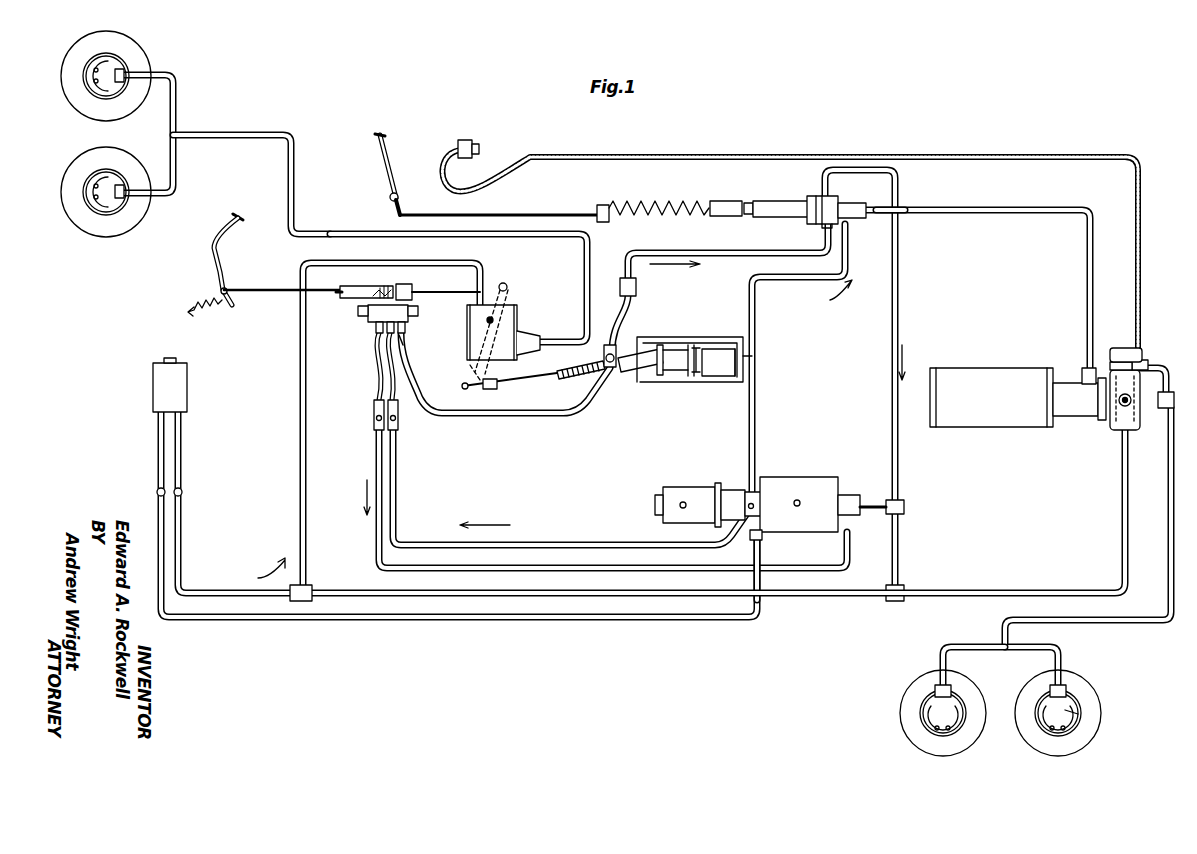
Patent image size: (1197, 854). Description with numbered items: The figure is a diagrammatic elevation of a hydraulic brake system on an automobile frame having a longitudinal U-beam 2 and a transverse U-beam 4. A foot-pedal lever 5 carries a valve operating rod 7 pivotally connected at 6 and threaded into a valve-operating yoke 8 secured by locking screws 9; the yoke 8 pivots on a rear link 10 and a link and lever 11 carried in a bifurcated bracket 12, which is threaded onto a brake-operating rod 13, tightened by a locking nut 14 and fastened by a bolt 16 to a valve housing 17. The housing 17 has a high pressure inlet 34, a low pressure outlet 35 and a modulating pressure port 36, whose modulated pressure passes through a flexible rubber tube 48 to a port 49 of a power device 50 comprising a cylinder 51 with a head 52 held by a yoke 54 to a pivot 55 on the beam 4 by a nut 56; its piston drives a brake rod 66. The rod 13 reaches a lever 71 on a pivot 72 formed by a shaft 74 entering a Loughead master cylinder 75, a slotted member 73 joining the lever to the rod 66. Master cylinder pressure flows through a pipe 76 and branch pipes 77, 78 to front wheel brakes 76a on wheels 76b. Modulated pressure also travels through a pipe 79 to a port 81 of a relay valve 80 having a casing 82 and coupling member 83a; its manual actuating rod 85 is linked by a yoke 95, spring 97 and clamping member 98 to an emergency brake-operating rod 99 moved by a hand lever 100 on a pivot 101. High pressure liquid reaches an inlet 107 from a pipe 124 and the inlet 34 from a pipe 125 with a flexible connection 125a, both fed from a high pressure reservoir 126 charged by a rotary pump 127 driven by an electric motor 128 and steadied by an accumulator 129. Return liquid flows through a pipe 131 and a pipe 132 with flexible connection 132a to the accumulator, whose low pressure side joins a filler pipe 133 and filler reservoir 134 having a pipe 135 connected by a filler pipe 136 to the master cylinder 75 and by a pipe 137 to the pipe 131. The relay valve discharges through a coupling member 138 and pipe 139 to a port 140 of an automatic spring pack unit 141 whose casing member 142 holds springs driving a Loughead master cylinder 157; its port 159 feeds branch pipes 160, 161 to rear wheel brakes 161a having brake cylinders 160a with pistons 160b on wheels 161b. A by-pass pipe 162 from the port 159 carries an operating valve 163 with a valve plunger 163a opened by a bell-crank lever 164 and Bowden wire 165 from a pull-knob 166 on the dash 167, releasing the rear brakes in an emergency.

The longitudinal U-beam 2 is at (643, 337).
The transverse U-beam 4 is at (718, 362).
The foot-pedal lever 5 is at (224, 262).
The pivot 6 is at (218, 293).
The valve operating rod 7 is at (278, 293).
The valve-operating yoke 8 is at (360, 287).
The locking screws 9 is at (340, 290).
The rear link 10 is at (390, 287).
The link and lever 11 is at (358, 311).
The bifurcated bracket 12 is at (378, 288).
The brake-operating rod 13 is at (463, 284).
The locking nut 14 is at (412, 290).
The bolt 16 is at (418, 308).
The valve housing 17 is at (408, 316).
The high pressure inlet 34 is at (408, 348).
The low pressure outlet 35 is at (376, 335).
The modulating pressure port 36 is at (395, 333).
The flexible rubber tube 48 is at (484, 414).
The port 49 is at (606, 372).
The power device 50 is at (618, 368).
The cylinder 51 is at (642, 372).
The head 52 is at (659, 376).
The yoke 54 is at (690, 345).
The pivot 55 is at (696, 374).
The nut 56 is at (752, 356).
The brake rod 66 is at (545, 378).
The lever 71 is at (507, 288).
The pivot 72 is at (486, 322).
The slotted member 73 is at (490, 390).
The shaft 74 is at (470, 325).
The Loughead master cylinder 75 is at (468, 360).
The pipe 76 is at (587, 306).
The front wheel brakes 76a is at (108, 160).
The wheels 76b is at (128, 45).
The branch pipe 77 is at (168, 76).
The branch pipe 78 is at (172, 195).
The pipe 79 is at (715, 256).
The relay valve 80 is at (790, 220).
The port 81 is at (822, 228).
The casing 82 is at (790, 192).
The coupling member 83a is at (820, 196).
The manual actuating rod 85 is at (750, 203).
The yoke 95 is at (722, 201).
The spring 97 is at (665, 192).
The clamping member 98 is at (602, 205).
The emergency brake-operating rod 99 is at (486, 214).
The hand lever 100 is at (383, 163).
The pivot 101 is at (392, 201).
The high pressure liquid inlet 107 is at (846, 224).
The pipe 124 is at (825, 280).
The pipe 125 is at (570, 545).
The flexible rubber connection 125a is at (400, 418).
The high pressure supply reservoir 126 is at (755, 548).
The rotary pump 127 is at (745, 498).
The electric motor 128 is at (690, 487).
The accumulator 129 is at (808, 477).
The pipe 131 is at (898, 312).
The pipe 132 is at (376, 556).
The flexible rubber connection 132a is at (374, 398).
The filler pipe 133 is at (498, 619).
The filler reservoir 134 is at (187, 388).
The pipe 135 is at (225, 580).
The filler pipe 136 is at (306, 470).
The pipe 137 is at (366, 596).
The coupling member 138 is at (905, 208).
The pipe 139 is at (1030, 209).
The port 140 is at (1082, 372).
The automatic spring pack device 141 is at (968, 370).
The second casing member 142 is at (1075, 405).
The Loughead master cylinder 157 is at (1115, 418).
The port 159 is at (1162, 408).
The branch pipe 160 is at (1062, 655).
The brake cylinders 160a is at (920, 718).
The pistons 160b is at (1040, 700).
The branch pipe 161 is at (940, 650).
The rear wheel brakes 161a is at (1082, 712).
The wheels 161b is at (910, 688).
The by-pass pipe 162 is at (1145, 360).
The operating valve 163 is at (1145, 360).
The valve plunger 163a is at (1112, 365).
The bell-crank lever 164 is at (1122, 348).
The Bowden wire 165 is at (1080, 150).
The pull-knob 166 is at (478, 146).
The dash 167 is at (465, 140).